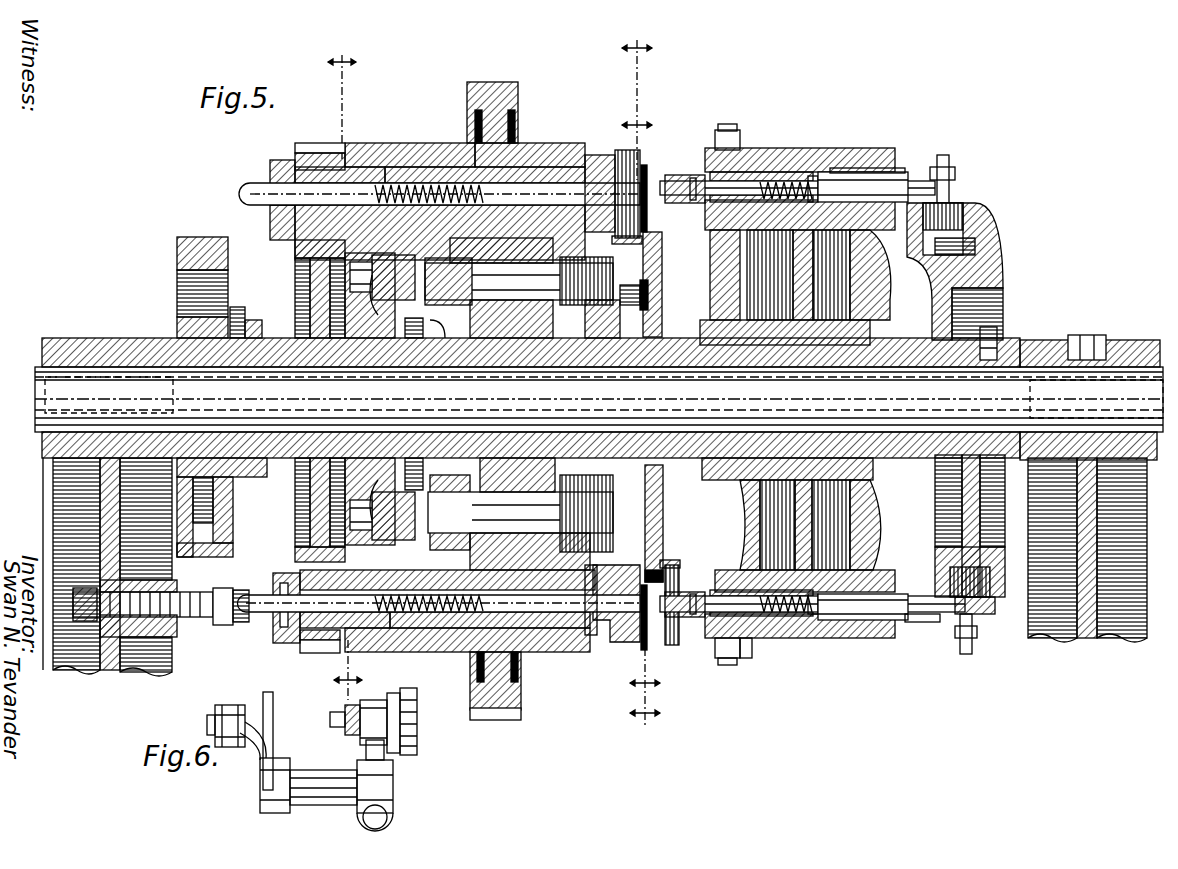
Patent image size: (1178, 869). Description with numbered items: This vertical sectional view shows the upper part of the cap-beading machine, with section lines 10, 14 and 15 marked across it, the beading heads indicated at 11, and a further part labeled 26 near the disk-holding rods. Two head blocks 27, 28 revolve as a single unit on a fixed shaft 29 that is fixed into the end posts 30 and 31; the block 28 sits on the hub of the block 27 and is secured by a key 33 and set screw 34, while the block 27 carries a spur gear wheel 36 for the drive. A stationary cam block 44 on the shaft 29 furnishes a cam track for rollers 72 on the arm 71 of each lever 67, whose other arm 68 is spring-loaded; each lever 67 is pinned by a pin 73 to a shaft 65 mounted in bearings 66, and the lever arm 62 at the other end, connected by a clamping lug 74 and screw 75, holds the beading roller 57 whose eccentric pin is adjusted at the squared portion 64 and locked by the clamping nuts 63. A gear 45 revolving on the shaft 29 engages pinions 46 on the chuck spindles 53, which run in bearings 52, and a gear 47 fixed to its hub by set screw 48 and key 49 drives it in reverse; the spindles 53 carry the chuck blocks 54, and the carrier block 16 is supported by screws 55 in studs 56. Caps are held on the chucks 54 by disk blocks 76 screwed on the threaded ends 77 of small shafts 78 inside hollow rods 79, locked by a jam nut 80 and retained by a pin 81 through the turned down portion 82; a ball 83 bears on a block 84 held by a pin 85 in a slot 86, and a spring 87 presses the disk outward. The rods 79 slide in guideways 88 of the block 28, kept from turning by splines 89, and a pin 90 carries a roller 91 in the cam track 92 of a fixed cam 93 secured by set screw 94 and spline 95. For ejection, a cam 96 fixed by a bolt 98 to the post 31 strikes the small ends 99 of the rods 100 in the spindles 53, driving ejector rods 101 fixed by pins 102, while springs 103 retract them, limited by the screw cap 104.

In FIG. 5, the section line 10— 10 is at (653, 396).
In FIG. 5, the sectional elevation through the beading heads 11 is at (625, 150).
In FIG. 5, the section line 14— 14 is at (358, 367).
In FIG. 5, the section line 15— 15 is at (662, 548).
In FIG. 5, the carrier block 16 is at (662, 499).
In FIG. 5, the nut 26 is at (746, 658).
In FIG. 5, the head block 27 is at (548, 370).
In FIG. 5, the head block 28 is at (832, 520).
In FIG. 5, the fixed shaft 29 is at (35, 378).
In FIG. 5, the end post 30 is at (1112, 638).
In FIG. 5, the end post 31 is at (85, 668).
In FIG. 5, the key 33 is at (870, 336).
In FIG. 5, the set screw 34 is at (850, 296).
In FIG. 5, the spur gear wheel 36 is at (498, 720).
In FIG. 5, the cam block 44 is at (383, 312).
In FIG. 5, the gear 45 is at (295, 262).
In FIG. 5, the pinion 46 is at (310, 143).
In FIG. 5, the gear 47 is at (177, 245).
In FIG. 5, the set screw 48 is at (238, 308).
In FIG. 5, the key 49 is at (256, 322).
In FIG. 5, the bearing 52 is at (570, 143).
In FIG. 5, the chuck spindle 53 is at (535, 143).
In FIG. 5, the chuck block 54 is at (600, 155).
In FIG. 5, the screw 55 is at (650, 295).
In FIG. 5, the stud 56 is at (612, 310).
In FIG. 6, the beading roller 57 is at (417, 740).
In FIG. 5, the lever arm 62 is at (625, 562).
In FIG. 6, the lever arm 62 is at (393, 790).
In FIG. 6, the clamping nut 63 is at (352, 735).
In FIG. 6, the squared portion 64 is at (335, 728).
In FIG. 5, the shaft 65 is at (614, 505).
In FIG. 6, the shaft 65 is at (320, 805).
In FIG. 5, the bearing 66 is at (505, 367).
In FIG. 5, the lever 67 is at (405, 258).
In FIG. 6, the lever 67 is at (260, 790).
In FIG. 6, the arm 68 is at (273, 726).
In FIG. 5, the arm 71 is at (380, 270).
In FIG. 6, the arm 71 is at (256, 752).
In FIG. 5, the roller 72 is at (360, 262).
In FIG. 6, the roller 72 is at (225, 706).
In FIG. 5, the pin 73 is at (445, 470).
In FIG. 6, the clamping lug 74 is at (388, 814).
In FIG. 6, the screw 75 is at (390, 824).
In FIG. 5, the disk block 76 is at (640, 155).
In FIG. 5, the threaded end 77 is at (655, 400).
In FIG. 5, the small shaft 78 is at (735, 148).
In FIG. 5, the rod 79 is at (712, 181).
In FIG. 5, the jam nut 80 is at (718, 135).
In FIG. 5, the pin 81 is at (685, 175).
In FIG. 5, the turned down portion 82 is at (692, 203).
In FIG. 5, the ball 83 is at (740, 250).
In FIG. 5, the block 84 is at (755, 178).
In FIG. 5, the pin 85 is at (800, 180).
In FIG. 5, the slot 86 is at (790, 172).
In FIG. 5, the spring 87 is at (815, 178).
In FIG. 5, the guideway 88 is at (860, 172).
In FIG. 5, the spline 89 is at (900, 170).
In FIG. 5, the pin 90 is at (950, 160).
In FIG. 5, the roller 91 is at (975, 210).
In FIG. 5, the cam track 92 is at (965, 230).
In FIG. 5, the fixed cam 93 is at (1003, 300).
In FIG. 5, the set screw 94 is at (997, 335).
In FIG. 5, the spline 95 is at (1030, 345).
In FIG. 5, the cam 96 is at (225, 625).
In FIG. 5, the bolt 98 is at (240, 592).
In FIG. 5, the small end 99 is at (245, 188).
In FIG. 5, the rod 100 is at (280, 165).
In FIG. 5, the ejector rod 101 is at (450, 167).
In FIG. 5, the pin 102 is at (360, 167).
In FIG. 5, the spring 103 is at (410, 183).
In FIG. 5, the screw cap 104 is at (272, 215).